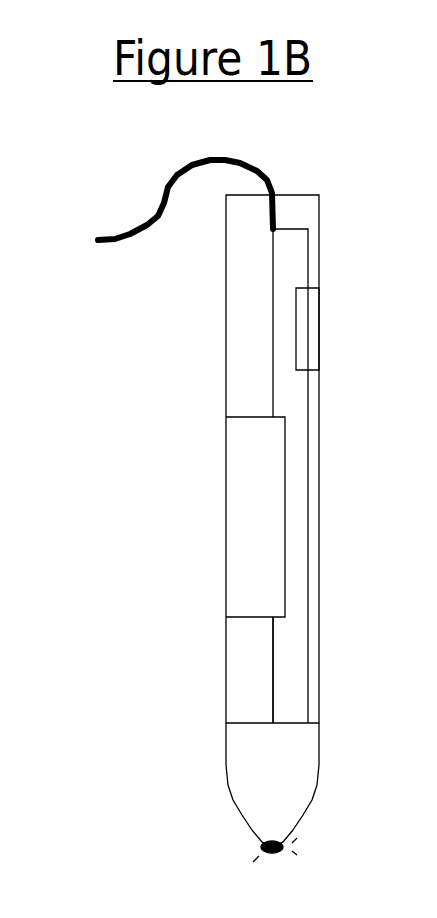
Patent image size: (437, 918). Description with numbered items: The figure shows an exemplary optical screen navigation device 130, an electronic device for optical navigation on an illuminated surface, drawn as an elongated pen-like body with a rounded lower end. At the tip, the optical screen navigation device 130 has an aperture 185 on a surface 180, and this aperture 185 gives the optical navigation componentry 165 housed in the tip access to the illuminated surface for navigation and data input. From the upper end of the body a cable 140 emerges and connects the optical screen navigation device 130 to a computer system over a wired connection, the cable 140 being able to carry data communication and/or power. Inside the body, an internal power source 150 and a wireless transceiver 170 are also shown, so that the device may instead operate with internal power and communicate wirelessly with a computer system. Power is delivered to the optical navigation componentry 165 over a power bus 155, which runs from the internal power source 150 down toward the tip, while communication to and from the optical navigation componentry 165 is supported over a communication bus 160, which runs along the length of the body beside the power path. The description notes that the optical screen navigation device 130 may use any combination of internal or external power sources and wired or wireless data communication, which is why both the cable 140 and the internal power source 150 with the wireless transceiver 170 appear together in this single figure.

The optical screen navigation device 130 is at (70, 146).
The cable 140 is at (126, 251).
The internal power source 150 is at (215, 501).
The power bus 155 is at (262, 690).
The communication bus 160 is at (315, 492).
The optical navigation componentry 165 is at (219, 790).
The wireless transceiver 170 is at (325, 318).
The surface 180 is at (294, 842).
The aperture 185 is at (250, 856).